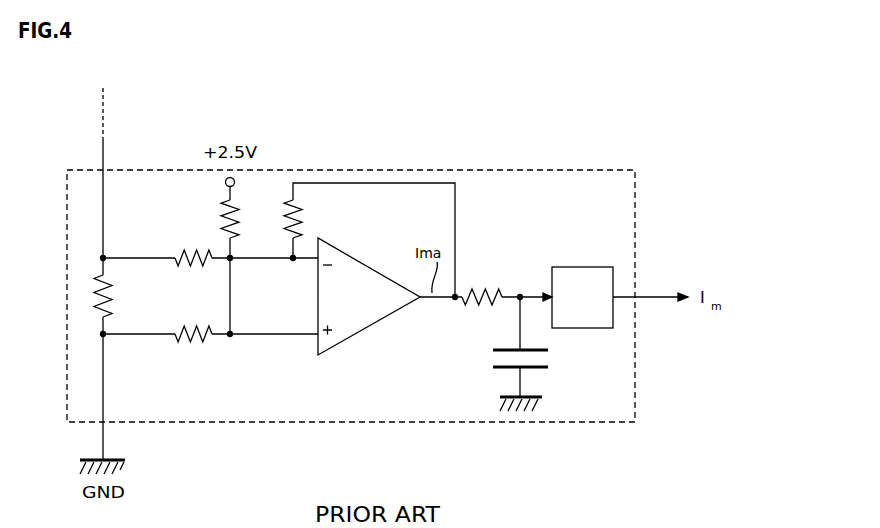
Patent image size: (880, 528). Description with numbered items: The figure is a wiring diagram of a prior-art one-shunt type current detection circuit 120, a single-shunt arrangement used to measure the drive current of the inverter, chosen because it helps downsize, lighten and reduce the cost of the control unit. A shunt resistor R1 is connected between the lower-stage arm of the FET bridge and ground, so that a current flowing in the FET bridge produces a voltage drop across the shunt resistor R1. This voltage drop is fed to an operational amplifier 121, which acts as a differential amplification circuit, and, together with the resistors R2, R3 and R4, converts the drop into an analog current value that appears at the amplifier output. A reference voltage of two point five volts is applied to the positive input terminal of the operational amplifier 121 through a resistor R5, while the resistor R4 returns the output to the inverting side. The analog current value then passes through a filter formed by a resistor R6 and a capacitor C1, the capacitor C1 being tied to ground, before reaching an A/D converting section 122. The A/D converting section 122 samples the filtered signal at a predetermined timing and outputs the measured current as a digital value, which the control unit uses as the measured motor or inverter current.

The one-shunt type current detection circuit 120 is at (606, 168).
The operational amplifier 121 is at (338, 247).
The A/D converting section 122 is at (594, 267).
The shunt resistor R1 is at (90, 296).
The resistor R2 is at (193, 270).
The resistor R3 is at (193, 346).
The resistor R4 is at (279, 219).
The resistor R5 is at (216, 219).
The resistor R6 is at (482, 310).
The capacitor C1 is at (508, 354).